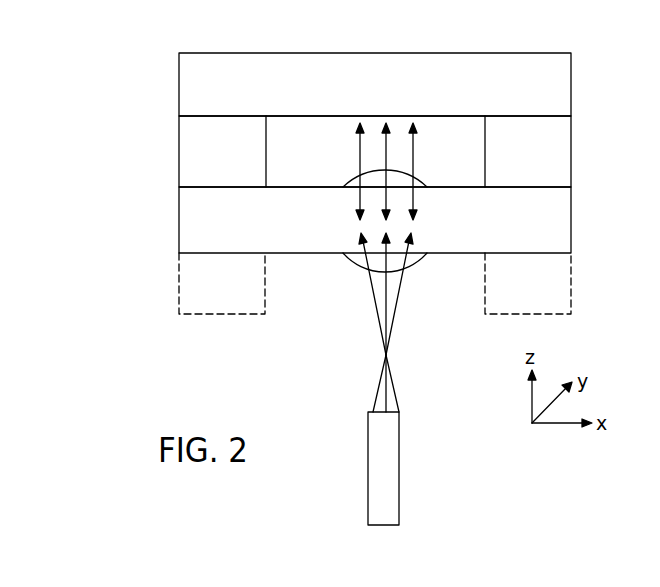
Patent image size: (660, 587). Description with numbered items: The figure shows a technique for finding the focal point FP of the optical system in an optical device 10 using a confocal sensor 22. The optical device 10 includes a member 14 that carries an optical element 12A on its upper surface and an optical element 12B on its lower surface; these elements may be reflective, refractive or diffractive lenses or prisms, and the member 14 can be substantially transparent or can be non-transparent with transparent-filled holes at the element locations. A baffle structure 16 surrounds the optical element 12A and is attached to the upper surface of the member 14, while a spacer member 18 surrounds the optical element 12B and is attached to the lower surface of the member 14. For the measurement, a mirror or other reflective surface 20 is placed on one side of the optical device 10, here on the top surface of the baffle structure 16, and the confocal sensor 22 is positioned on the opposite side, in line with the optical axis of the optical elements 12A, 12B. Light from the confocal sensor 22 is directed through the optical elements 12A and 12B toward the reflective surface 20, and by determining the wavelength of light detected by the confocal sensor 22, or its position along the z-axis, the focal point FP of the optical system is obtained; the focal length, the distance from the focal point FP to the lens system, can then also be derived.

The optical device 10 is at (598, 180).
The mirror or other reflective surface 20 is at (179, 93).
The baffle structure 16 is at (179, 165).
The member 14 is at (179, 225).
The spacer member 18 is at (179, 300).
The optical element 12A is at (425, 177).
The optical element 12B is at (410, 268).
The focal point FP is at (374, 350).
The confocal sensor 22 is at (368, 451).